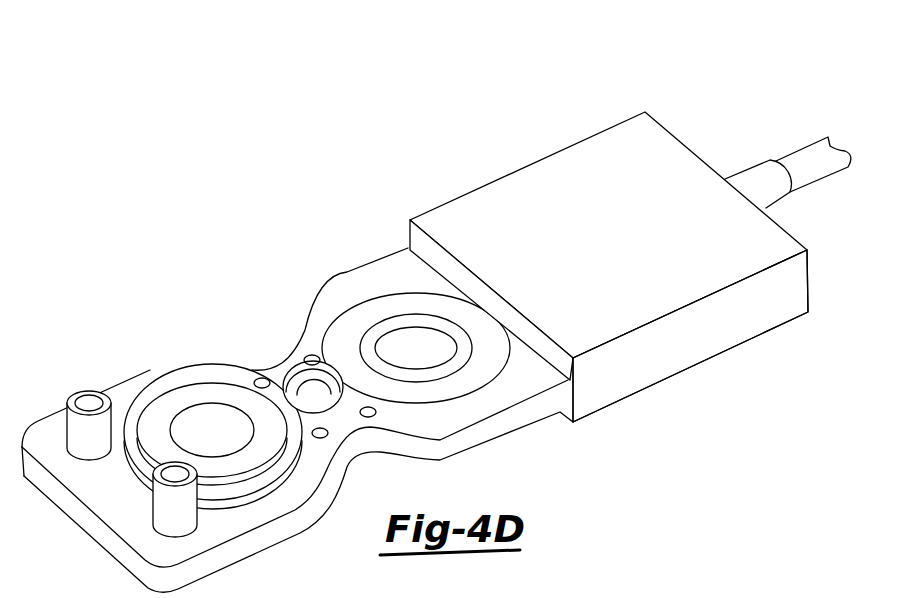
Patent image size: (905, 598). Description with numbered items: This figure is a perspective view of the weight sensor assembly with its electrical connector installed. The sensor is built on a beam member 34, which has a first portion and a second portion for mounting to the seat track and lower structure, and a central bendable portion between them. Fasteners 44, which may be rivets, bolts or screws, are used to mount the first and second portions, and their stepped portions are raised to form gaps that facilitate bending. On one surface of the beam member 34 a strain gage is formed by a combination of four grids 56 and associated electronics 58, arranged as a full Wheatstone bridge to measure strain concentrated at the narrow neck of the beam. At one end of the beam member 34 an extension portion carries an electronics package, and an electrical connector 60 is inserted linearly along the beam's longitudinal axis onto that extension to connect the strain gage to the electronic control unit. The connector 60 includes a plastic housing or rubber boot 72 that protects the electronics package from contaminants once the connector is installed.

The beam member 34 is at (365, 288).
The fasteners 44 is at (168, 428).
The grids 56 is at (312, 357).
The associated electronics 58 is at (327, 384).
The electrical connector 60 is at (634, 211).
The plastic housing or rubber boot 72 is at (737, 241).